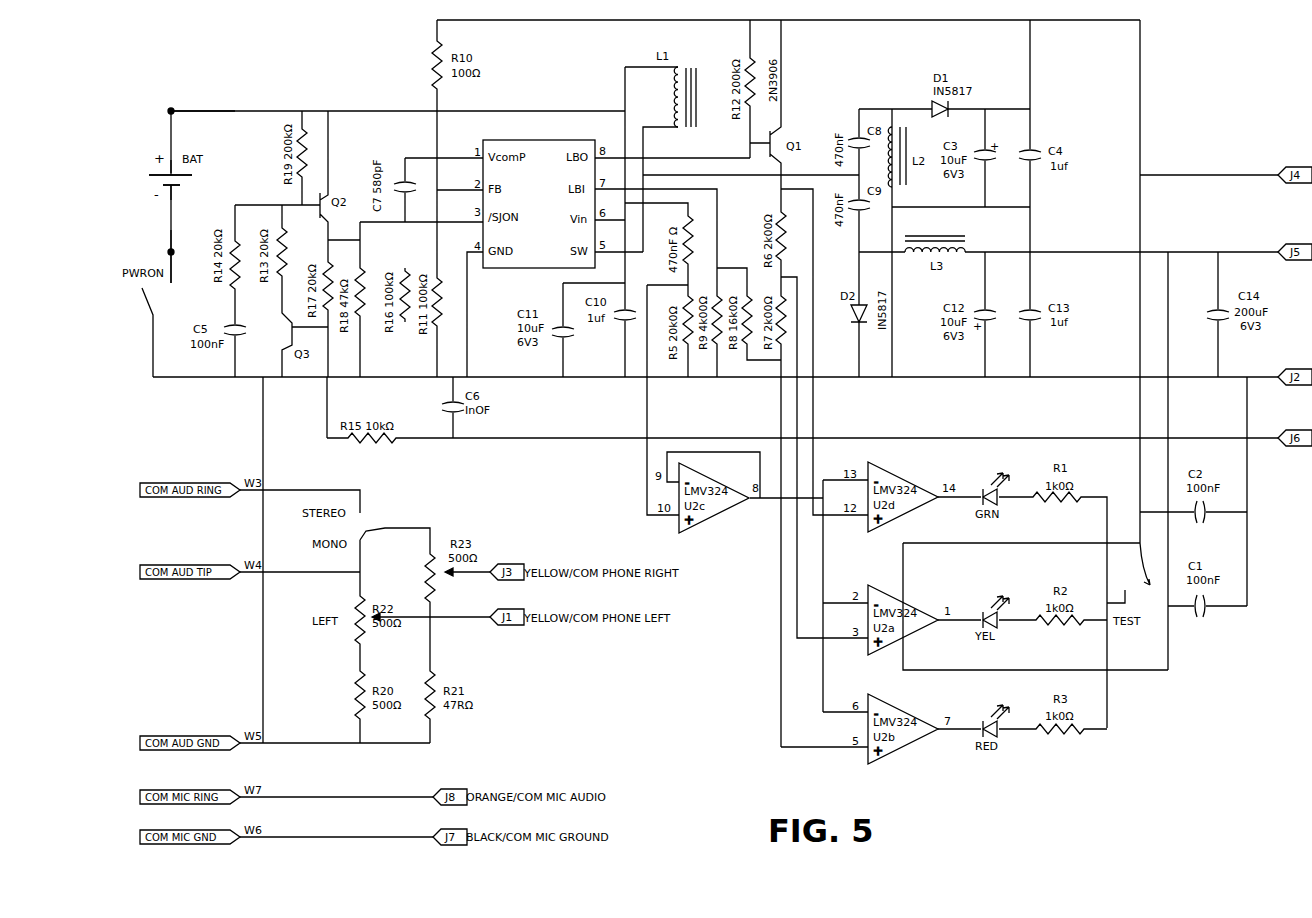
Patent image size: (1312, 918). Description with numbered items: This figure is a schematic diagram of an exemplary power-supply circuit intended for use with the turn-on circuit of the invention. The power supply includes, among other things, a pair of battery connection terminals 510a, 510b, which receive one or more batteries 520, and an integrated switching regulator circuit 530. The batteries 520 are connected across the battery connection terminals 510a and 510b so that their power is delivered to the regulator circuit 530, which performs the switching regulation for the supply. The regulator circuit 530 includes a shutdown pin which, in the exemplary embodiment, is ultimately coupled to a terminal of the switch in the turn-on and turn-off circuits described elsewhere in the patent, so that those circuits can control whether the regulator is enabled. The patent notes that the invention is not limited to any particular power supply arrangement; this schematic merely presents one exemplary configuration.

The battery connection terminal 510a is at (171, 111).
The battery connection terminal 510b is at (171, 252).
The battery 520 is at (185, 175).
The integrated switching regulator circuit 530 is at (531, 139).